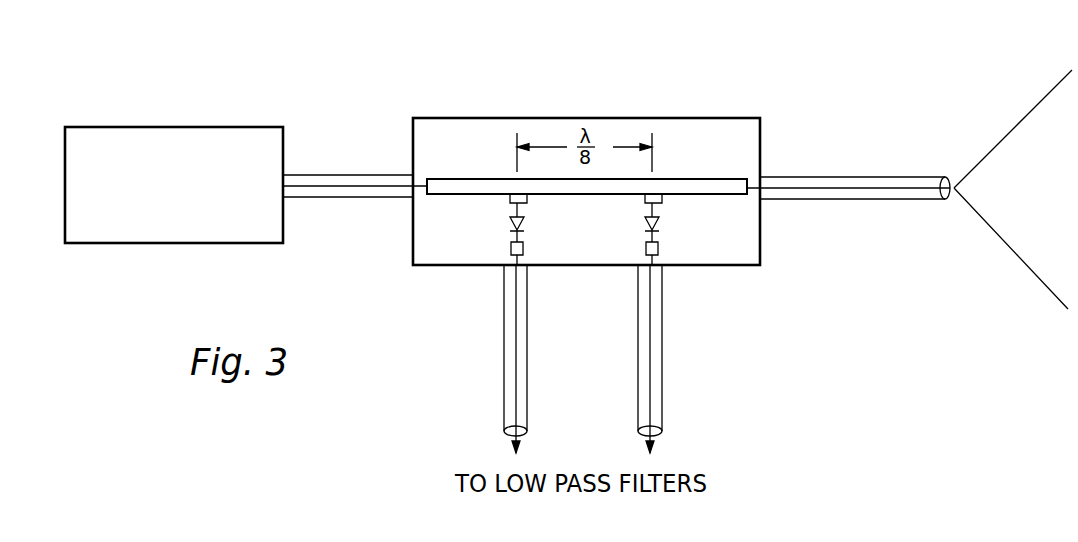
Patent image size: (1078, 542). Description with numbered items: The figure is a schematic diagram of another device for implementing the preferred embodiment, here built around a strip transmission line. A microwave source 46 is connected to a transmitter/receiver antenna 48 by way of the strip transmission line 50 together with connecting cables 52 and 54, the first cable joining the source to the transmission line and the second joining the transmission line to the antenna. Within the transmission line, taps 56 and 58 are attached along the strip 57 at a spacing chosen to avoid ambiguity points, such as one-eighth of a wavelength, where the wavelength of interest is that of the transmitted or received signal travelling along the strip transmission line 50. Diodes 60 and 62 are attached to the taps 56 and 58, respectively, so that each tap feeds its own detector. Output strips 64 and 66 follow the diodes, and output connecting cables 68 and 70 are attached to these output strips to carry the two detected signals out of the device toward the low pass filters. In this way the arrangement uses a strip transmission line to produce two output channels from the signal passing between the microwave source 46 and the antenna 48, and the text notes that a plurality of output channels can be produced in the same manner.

The microwave source 46 is at (195, 127).
The transmitter/receiver antenna 48 is at (1046, 93).
The strip transmission line 50 is at (708, 118).
The connecting cable 52 is at (358, 197).
The connecting cable 54 is at (848, 200).
The tap 56 is at (508, 197).
The strip 57 is at (720, 178).
The tap 58 is at (660, 205).
The diode 60 is at (526, 222).
The diode 62 is at (645, 228).
The output strip 64 is at (524, 250).
The output strip 66 is at (663, 250).
The output connecting cable 68 is at (527, 345).
The output connecting cable 70 is at (662, 345).